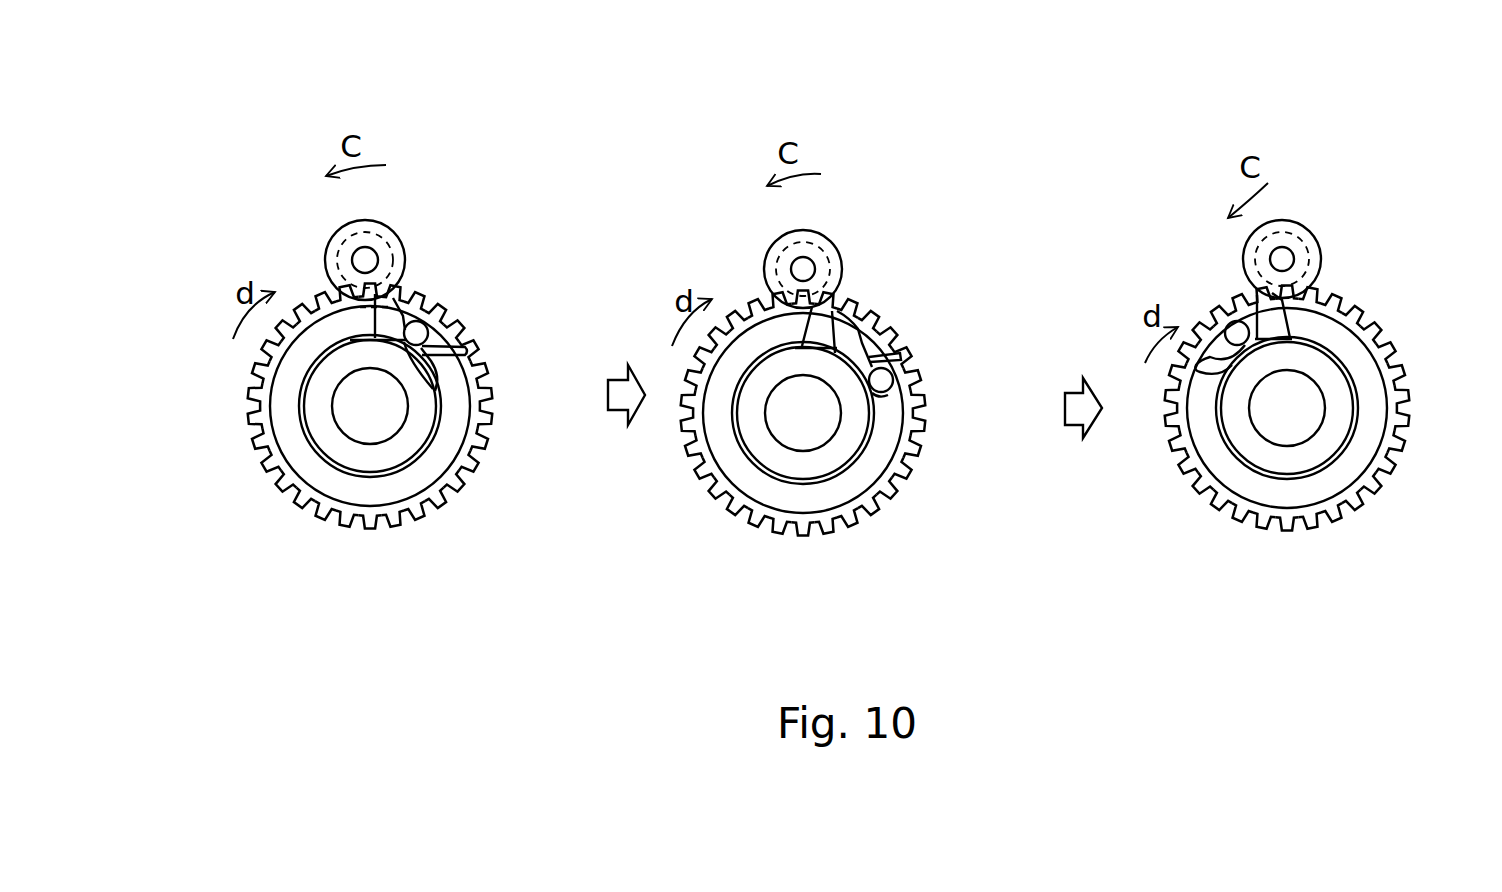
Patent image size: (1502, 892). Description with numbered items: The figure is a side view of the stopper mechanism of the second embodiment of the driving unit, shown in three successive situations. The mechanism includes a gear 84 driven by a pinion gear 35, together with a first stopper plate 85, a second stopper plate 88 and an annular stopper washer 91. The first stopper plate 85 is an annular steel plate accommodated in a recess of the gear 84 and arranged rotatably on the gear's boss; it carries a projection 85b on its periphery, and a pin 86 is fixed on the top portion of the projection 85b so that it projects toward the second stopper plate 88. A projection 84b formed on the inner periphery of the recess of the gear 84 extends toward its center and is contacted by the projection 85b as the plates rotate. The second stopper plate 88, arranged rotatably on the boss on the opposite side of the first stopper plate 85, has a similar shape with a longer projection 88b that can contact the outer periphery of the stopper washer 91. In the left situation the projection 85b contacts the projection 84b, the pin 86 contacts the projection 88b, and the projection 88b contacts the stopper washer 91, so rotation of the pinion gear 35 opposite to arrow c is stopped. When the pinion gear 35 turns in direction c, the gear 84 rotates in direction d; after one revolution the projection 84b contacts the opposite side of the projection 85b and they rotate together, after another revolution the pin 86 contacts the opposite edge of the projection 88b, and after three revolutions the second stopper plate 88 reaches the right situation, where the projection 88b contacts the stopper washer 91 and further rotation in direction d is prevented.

The pinion gear 35 is at (330, 241).
The gear 84 is at (470, 344).
The projection 84b is at (435, 351).
The first stopper plate 85 is at (439, 394).
The projection 85b is at (421, 346).
The pin 86 is at (424, 322).
The second stopper plate 88 is at (435, 429).
The projection 88b is at (386, 307).
The stopper washer 91 is at (393, 220).